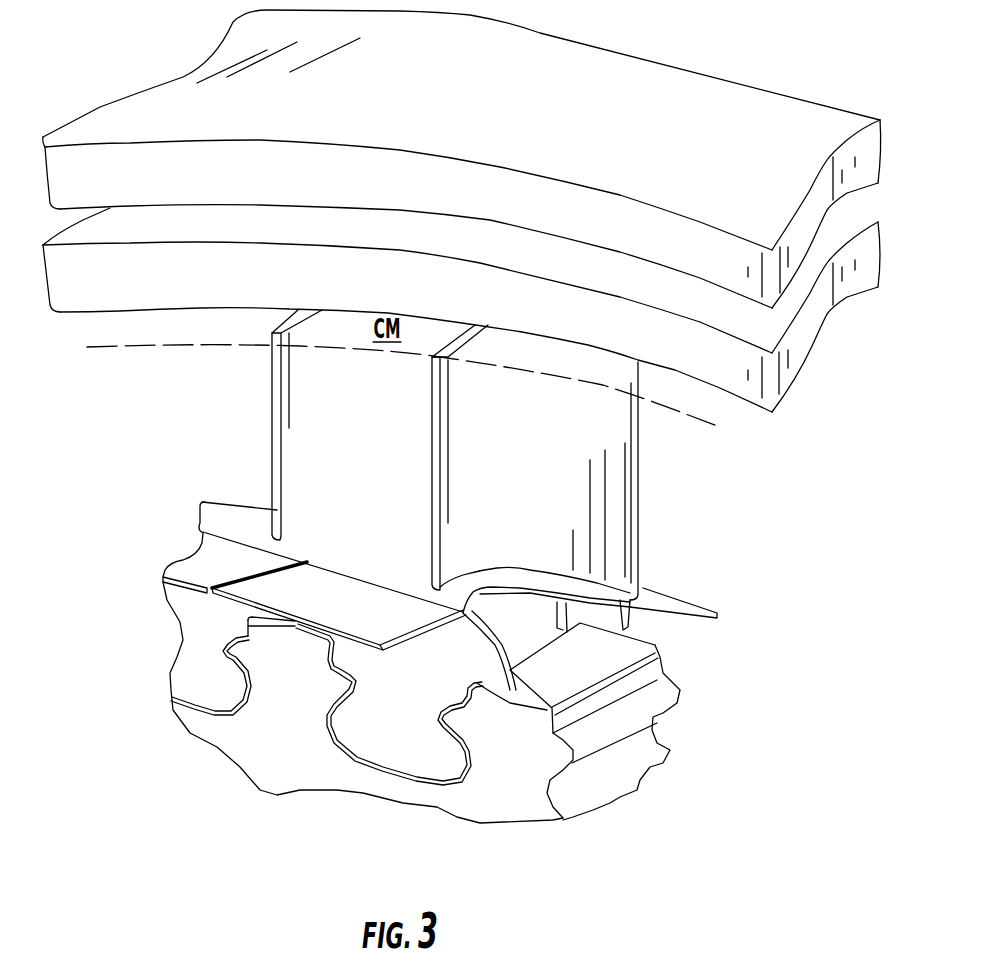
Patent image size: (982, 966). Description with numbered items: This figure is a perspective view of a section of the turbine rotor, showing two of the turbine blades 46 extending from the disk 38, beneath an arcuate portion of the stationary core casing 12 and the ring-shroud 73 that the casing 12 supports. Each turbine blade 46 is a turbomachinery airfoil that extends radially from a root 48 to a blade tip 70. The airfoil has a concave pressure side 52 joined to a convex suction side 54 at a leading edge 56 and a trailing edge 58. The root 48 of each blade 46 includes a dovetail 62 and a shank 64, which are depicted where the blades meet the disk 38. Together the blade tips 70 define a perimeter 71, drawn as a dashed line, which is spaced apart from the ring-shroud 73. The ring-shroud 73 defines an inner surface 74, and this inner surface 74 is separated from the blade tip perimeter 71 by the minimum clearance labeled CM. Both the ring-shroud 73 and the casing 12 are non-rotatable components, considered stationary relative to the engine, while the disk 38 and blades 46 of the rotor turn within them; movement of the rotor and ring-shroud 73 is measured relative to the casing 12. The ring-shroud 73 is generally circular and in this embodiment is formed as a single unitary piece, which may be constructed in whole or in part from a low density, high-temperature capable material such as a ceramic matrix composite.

The core casing 12 is at (787, 117).
The disk 38 is at (725, 712).
The turbine blade 46 is at (457, 500).
The root 48 is at (650, 587).
The concave pressure side 52 is at (365, 429).
The convex suction side 54 is at (277, 439).
The leading edge 56 is at (280, 485).
The trailing edge 58 is at (643, 517).
The dovetail 62 is at (243, 710).
The shank 64 is at (230, 662).
The blade tip 70 is at (288, 333).
The perimeter 71 is at (683, 413).
The ring-shroud 73 is at (718, 345).
The inner surface 74 is at (105, 312).